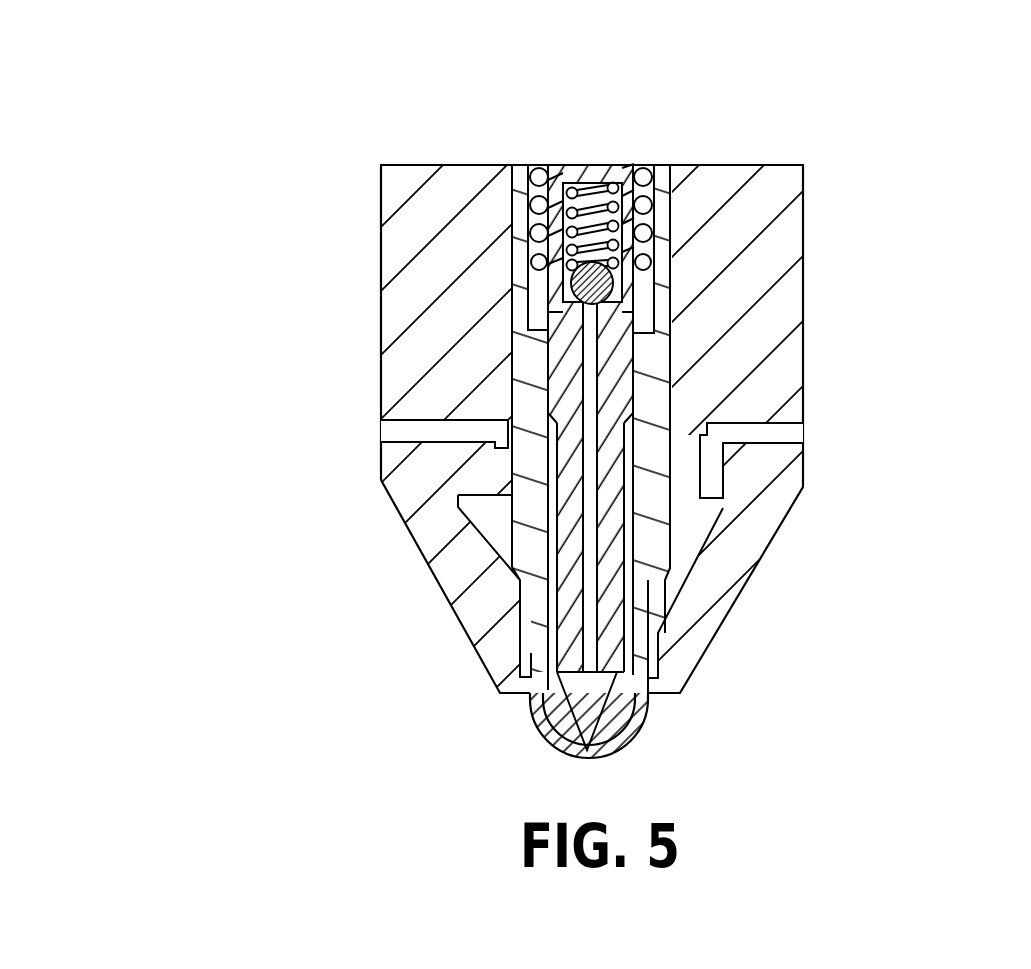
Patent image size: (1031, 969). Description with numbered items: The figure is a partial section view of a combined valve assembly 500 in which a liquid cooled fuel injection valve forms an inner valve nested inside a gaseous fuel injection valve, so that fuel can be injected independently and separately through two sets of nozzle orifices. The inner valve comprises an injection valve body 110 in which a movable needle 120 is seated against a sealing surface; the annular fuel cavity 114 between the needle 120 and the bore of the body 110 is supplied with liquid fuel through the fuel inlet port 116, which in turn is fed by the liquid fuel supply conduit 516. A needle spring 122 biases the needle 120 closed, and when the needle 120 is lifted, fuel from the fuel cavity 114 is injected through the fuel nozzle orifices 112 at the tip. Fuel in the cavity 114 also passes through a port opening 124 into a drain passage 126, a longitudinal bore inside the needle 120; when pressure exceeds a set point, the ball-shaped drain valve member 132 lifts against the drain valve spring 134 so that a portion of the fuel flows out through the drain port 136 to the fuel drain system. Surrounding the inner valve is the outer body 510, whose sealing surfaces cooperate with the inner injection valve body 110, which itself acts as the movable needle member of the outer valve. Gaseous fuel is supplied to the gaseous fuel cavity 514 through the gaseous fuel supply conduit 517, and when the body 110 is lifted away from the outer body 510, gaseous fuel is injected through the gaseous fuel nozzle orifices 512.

The combined valve assembly 500 is at (300, 116).
The outer body 510 is at (433, 290).
The liquid fuel supply conduit 516 is at (430, 433).
The gaseous fuel supply conduit 517 is at (770, 437).
The fuel inlet port 116 is at (522, 430).
The gaseous fuel cavity 514 is at (680, 542).
The injection valve body 110 is at (527, 392).
The fuel cavity 114 is at (605, 528).
The movable needle 120 is at (572, 512).
The needle spring 122 is at (540, 237).
The drain valve spring 134 is at (612, 222).
The drain valve member 132 is at (612, 268).
The drain port 136 is at (556, 247).
The port opening 124 is at (557, 660).
The drain passage 126 is at (682, 497).
The gaseous fuel nozzle orifices 512 is at (673, 653).
The fuel nozzle orifices 112 is at (556, 717).